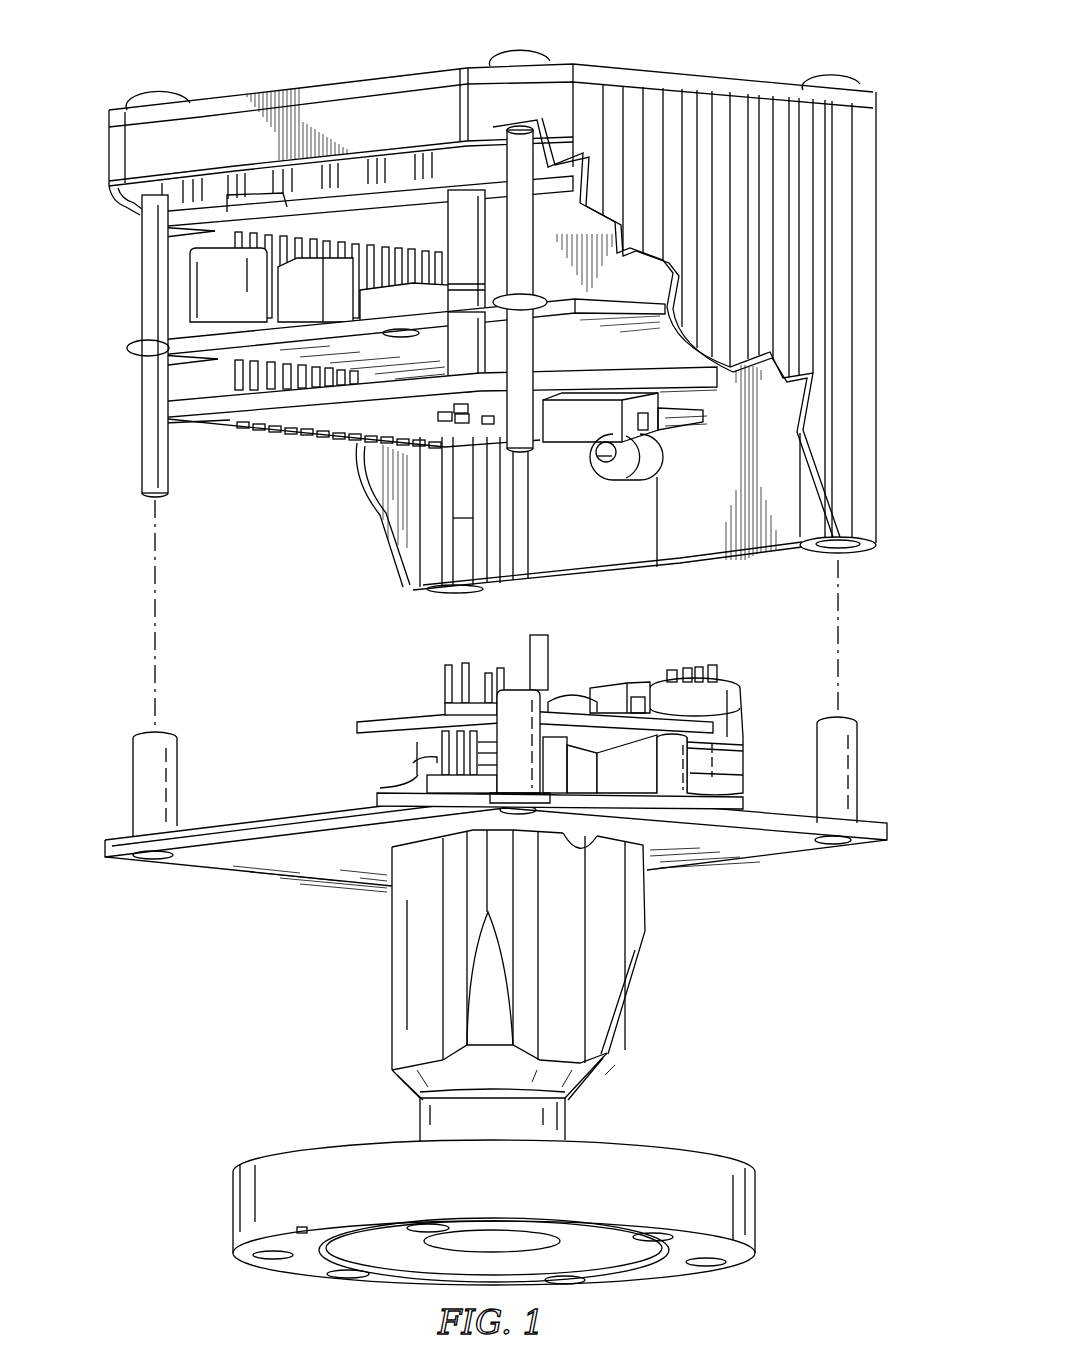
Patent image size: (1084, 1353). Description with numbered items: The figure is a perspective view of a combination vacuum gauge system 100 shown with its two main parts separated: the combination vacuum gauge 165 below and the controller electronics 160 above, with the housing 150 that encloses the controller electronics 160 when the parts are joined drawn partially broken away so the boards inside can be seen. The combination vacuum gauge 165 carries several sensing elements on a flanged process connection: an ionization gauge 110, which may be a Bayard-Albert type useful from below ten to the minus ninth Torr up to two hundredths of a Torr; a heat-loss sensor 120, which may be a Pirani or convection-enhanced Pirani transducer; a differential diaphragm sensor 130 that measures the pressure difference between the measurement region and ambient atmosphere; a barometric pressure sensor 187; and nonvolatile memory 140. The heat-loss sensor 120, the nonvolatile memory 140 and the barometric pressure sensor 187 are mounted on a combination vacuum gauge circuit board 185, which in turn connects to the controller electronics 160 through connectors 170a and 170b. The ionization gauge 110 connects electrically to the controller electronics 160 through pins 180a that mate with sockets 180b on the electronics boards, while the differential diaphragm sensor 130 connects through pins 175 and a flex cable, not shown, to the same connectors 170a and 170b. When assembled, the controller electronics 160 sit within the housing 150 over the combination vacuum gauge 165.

The combination vacuum gauge system 100 is at (640, 48).
The housing 150 is at (877, 318).
The controller electronics 160 is at (110, 306).
The combination vacuum gauge 165 is at (335, 982).
The connector 170a is at (615, 695).
The connector 170b is at (580, 430).
The pins 175 is at (716, 672).
The pins 180a is at (442, 672).
The sockets 180b is at (438, 416).
The combination vacuum gauge circuit board 185 is at (360, 728).
The barometric pressure sensor 187 is at (572, 692).
The nonvolatile memory 140 is at (445, 700).
The ionization gauge 110 is at (418, 748).
The heat-loss sensor 120 is at (420, 778).
The differential diaphragm sensor 130 is at (743, 706).